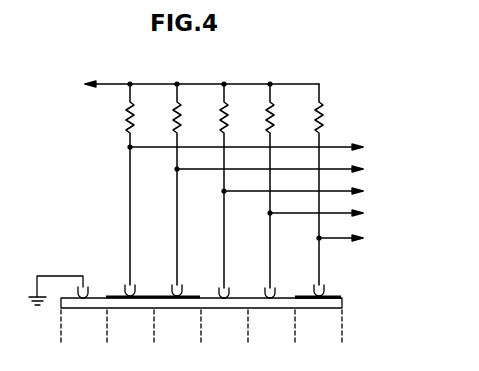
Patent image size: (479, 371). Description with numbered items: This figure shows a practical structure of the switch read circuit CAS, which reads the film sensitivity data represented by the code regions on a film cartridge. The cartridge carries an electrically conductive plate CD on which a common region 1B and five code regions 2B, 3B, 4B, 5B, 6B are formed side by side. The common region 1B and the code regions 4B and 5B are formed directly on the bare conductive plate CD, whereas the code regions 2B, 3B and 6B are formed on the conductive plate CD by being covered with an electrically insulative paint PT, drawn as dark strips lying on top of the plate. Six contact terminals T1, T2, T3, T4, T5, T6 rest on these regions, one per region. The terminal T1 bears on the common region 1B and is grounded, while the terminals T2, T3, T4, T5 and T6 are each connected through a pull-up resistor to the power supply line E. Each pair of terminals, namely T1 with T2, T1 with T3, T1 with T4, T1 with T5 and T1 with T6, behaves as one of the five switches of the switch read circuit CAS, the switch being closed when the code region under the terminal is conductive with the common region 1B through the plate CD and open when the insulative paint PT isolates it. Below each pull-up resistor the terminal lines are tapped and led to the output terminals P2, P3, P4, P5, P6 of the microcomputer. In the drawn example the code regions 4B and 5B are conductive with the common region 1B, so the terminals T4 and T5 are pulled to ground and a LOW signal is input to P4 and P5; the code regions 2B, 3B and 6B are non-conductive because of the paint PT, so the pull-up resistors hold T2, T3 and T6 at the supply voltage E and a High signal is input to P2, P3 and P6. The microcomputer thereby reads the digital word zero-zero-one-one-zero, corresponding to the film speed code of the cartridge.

The power supply line E is at (182, 87).
The switch read circuit CAS is at (361, 80).
The microcomputer terminal P2 is at (261, 148).
The microcomputer terminal P3 is at (285, 170).
The microcomputer terminal P4 is at (308, 192).
The microcomputer terminal P5 is at (331, 214).
The microcomputer terminal P6 is at (356, 239).
The terminal T1 is at (87, 287).
The terminal T2 is at (133, 285).
The terminal T3 is at (180, 285).
The terminal T4 is at (228, 288).
The terminal T5 is at (274, 288).
The terminal T6 is at (322, 285).
The electrically insulative paint PT is at (115, 295).
The electrically conductive plate CD is at (328, 307).
The common region 1B is at (78, 334).
The code region 2B is at (124, 334).
The code region 3B is at (171, 334).
The code region 4B is at (219, 334).
The code region 5B is at (267, 334).
The code region 6B is at (314, 334).